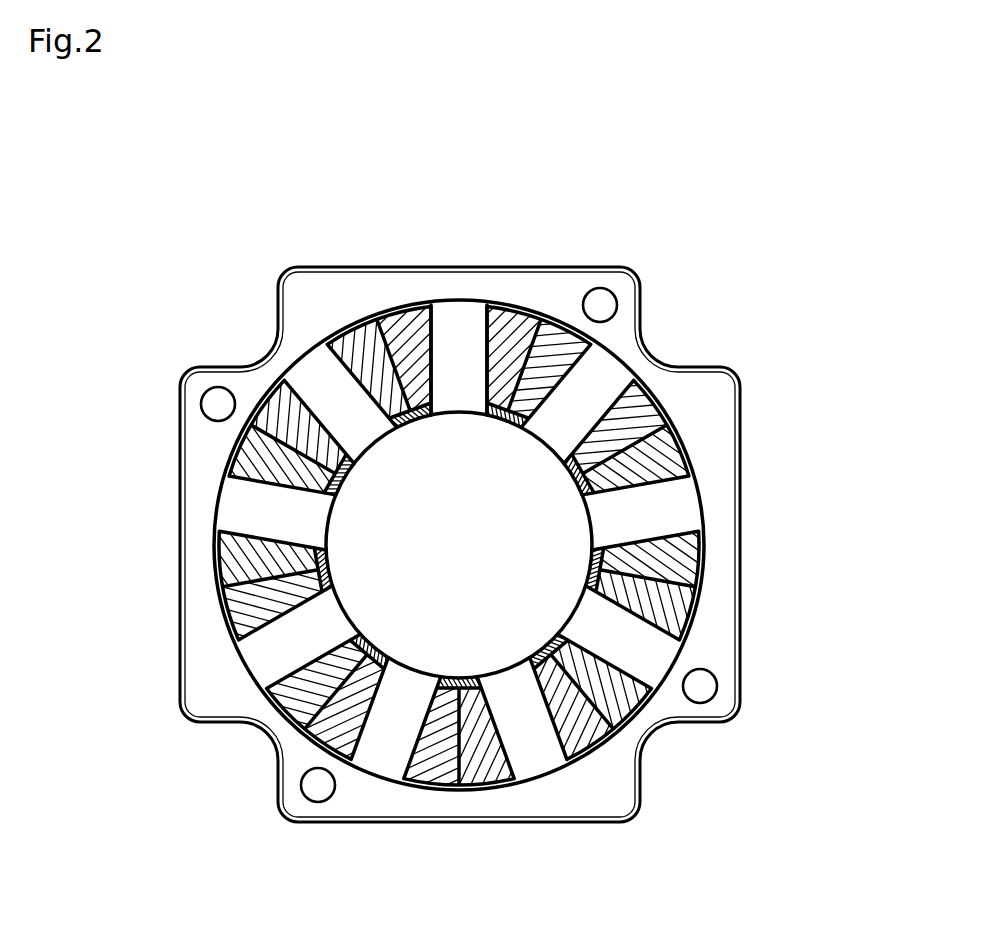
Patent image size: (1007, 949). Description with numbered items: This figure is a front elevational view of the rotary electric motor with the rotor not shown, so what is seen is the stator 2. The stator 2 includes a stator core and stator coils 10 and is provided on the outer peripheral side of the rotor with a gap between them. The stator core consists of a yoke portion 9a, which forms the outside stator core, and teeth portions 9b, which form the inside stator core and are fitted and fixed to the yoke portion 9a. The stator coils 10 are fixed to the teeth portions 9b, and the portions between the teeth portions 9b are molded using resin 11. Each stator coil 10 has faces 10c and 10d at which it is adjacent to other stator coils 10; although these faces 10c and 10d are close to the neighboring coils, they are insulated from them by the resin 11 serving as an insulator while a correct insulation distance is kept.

The stator 2 is at (495, 242).
The yoke portion 9a is at (477, 285).
The teeth portions 9b is at (455, 318).
The stator coil 10 is at (595, 318).
The face of the stator coil 10c is at (370, 323).
The face of the stator coil 10d is at (532, 351).
The resin 11 is at (695, 627).